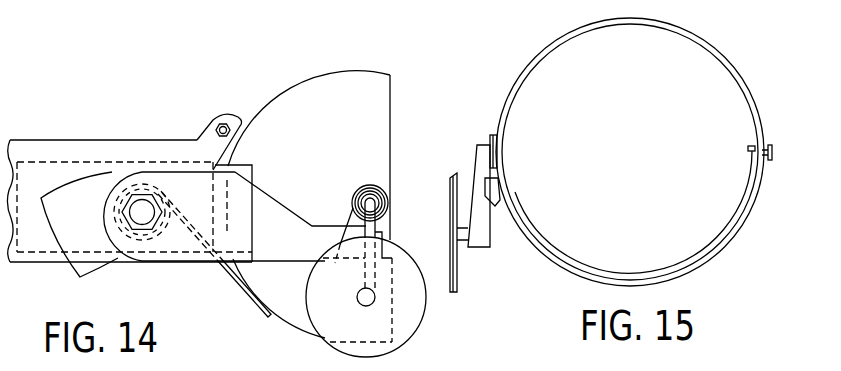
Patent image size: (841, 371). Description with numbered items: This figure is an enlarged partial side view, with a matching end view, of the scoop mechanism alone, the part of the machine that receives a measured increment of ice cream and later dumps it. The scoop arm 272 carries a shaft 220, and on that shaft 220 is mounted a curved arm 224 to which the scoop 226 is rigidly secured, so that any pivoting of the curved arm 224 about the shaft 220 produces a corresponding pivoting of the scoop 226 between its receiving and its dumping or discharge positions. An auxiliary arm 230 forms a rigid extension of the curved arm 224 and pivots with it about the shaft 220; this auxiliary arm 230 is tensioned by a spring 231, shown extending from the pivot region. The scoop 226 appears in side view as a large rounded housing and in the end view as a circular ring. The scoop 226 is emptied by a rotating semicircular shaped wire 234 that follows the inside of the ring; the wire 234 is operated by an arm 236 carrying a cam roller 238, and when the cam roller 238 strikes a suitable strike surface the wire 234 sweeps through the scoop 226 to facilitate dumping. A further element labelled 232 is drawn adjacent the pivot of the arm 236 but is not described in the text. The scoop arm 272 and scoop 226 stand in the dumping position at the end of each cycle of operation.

In FIG. 14, the shaft 220 is at (141, 209).
In FIG. 14, the curved arm 224 is at (97, 186).
In FIG. 14, the scoop 226 is at (352, 72).
In FIG. 15, the scoop 226 is at (738, 62).
In FIG. 14, the auxiliary arm 230 is at (291, 305).
In FIG. 14, the spring 231 is at (228, 276).
In FIG. 14, the link 232 is at (347, 222).
In FIG. 15, the semicircular shaped wire 234 is at (541, 228).
In FIG. 14, the arm 236 is at (369, 227).
In FIG. 15, the arm 236 is at (480, 152).
In FIG. 14, the cam roller 238 is at (412, 315).
In FIG. 15, the cam roller 238 is at (458, 272).
In FIG. 14, the scoop arm 272 is at (66, 149).